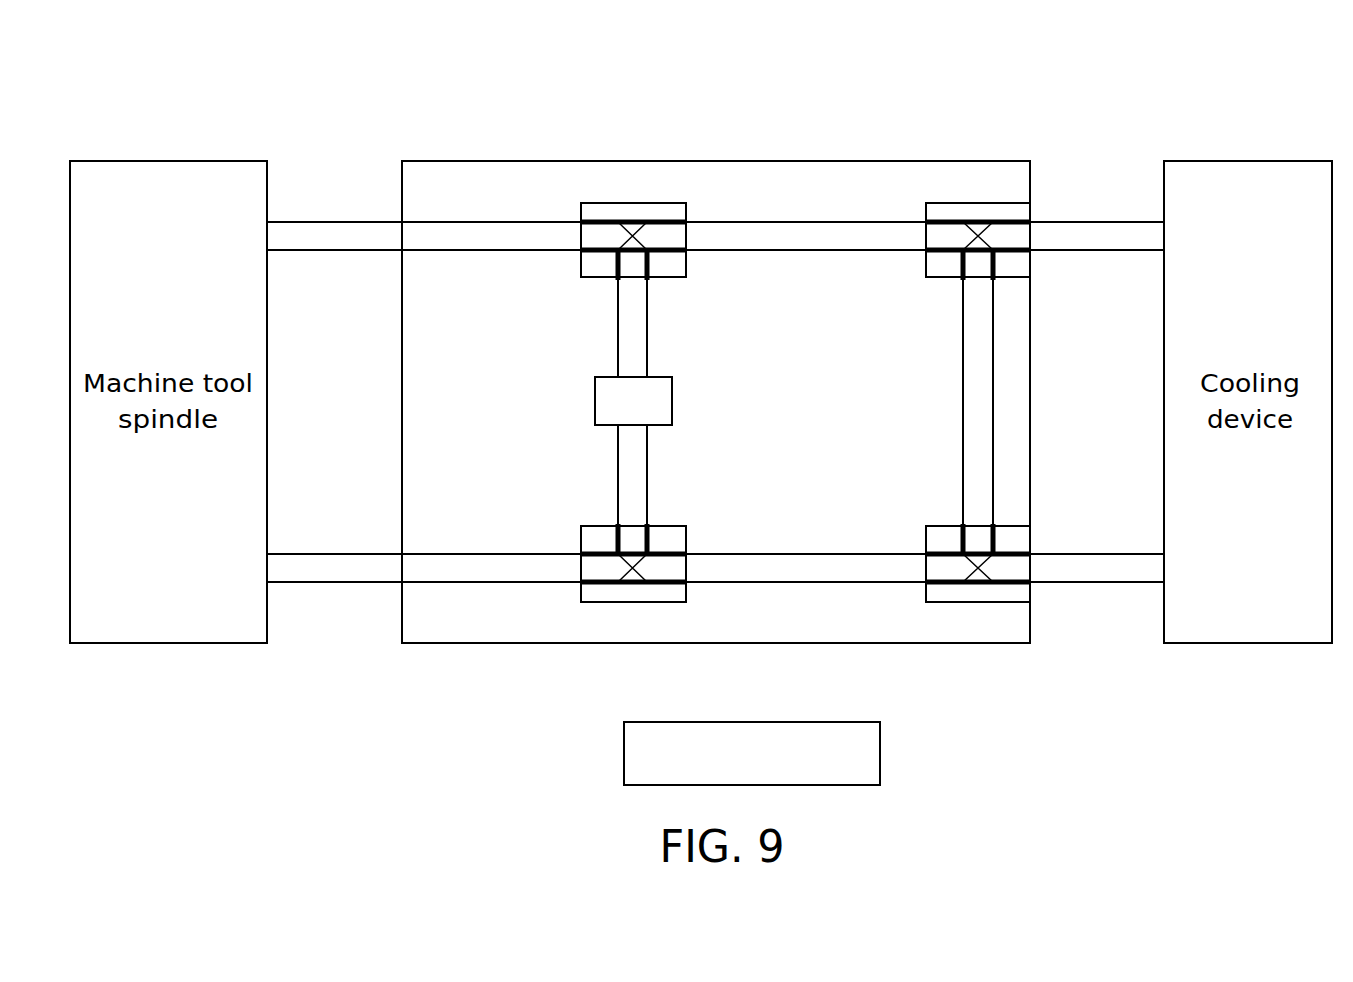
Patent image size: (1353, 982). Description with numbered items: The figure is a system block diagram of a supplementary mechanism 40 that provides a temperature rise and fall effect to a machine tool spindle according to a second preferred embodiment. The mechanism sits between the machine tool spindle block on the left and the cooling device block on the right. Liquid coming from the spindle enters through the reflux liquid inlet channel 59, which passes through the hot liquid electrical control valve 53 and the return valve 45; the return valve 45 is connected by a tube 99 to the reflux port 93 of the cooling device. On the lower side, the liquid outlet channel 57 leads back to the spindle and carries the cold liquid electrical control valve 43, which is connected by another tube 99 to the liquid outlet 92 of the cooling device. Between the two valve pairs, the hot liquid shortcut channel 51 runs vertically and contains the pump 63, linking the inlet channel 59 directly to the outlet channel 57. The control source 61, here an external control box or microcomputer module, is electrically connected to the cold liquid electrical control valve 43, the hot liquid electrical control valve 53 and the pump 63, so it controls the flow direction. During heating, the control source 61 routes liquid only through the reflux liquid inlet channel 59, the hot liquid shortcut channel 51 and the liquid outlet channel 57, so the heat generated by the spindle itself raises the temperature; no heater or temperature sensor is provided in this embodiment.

The supplementary mechanism 40 is at (810, 118).
The cold liquid electrical control valve 43 is at (978, 602).
The return valve 45 is at (979, 203).
The hot liquid shortcut channel 51 is at (647, 467).
The hot liquid electrical control valve 53 is at (634, 203).
The liquid outlet channel 57 is at (500, 583).
The reflux liquid inlet channel 59 is at (500, 221).
The control source 61 is at (880, 745).
The pump 63 is at (595, 400).
The liquid outlet 92 is at (1164, 582).
The reflux port 93 is at (1164, 222).
The tube 99 is at (1075, 221).